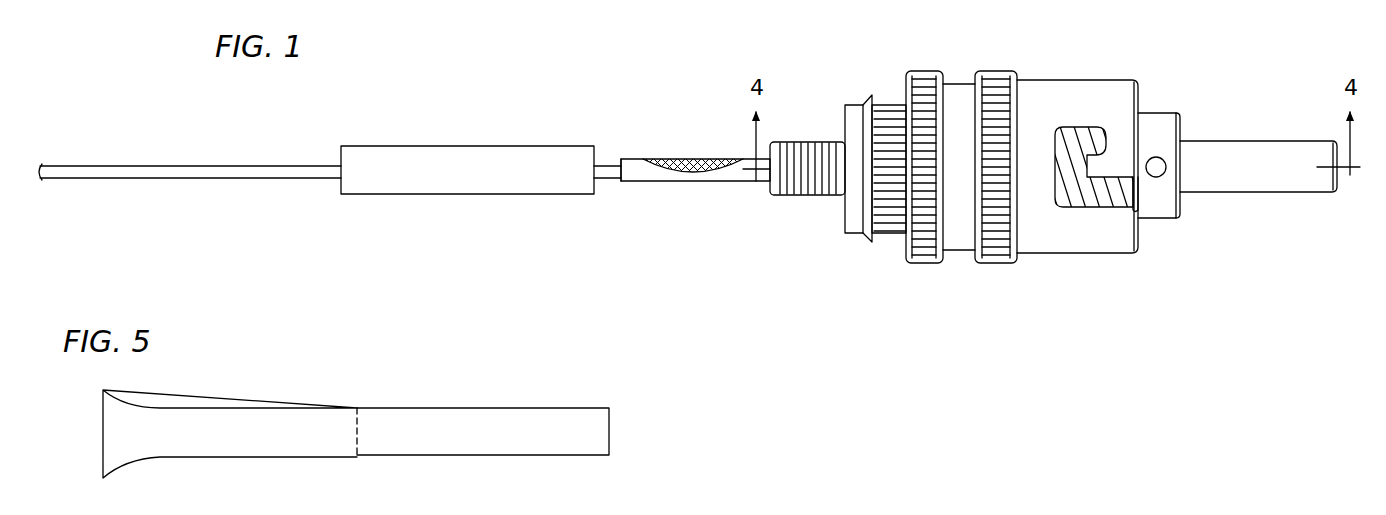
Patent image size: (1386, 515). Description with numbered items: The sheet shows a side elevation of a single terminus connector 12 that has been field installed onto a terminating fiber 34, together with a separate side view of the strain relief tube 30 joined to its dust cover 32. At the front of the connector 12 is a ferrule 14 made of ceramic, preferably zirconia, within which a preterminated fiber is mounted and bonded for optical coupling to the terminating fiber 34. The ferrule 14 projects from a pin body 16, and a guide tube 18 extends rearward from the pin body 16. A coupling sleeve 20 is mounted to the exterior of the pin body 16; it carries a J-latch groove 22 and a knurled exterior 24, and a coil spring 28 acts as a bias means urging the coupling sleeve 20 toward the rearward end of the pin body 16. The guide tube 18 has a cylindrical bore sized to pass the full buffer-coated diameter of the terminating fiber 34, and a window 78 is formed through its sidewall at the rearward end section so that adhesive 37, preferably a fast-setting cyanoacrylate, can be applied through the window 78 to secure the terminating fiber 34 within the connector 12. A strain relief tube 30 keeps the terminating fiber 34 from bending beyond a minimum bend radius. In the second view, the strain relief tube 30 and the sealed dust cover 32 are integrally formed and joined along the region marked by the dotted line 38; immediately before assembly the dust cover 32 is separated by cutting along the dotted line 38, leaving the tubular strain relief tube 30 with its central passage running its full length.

In FIG. 1, the single terminus connector 12 is at (614, 100).
In FIG. 1, the ferrule 14 is at (1240, 147).
In FIG. 1, the pin body 16 is at (1158, 118).
In FIG. 1, the guide tube 18 is at (643, 179).
In FIG. 1, the coupling sleeve 20 is at (1068, 88).
In FIG. 1, the J-latch groove 22 is at (1106, 199).
In FIG. 1, the knurled exterior 24 is at (1000, 258).
In FIG. 1, the coil spring 28 is at (1093, 126).
In FIG. 1, the strain relief tube 30 is at (397, 193).
In FIG. 5, the strain relief tube 30 is at (405, 453).
In FIG. 5, the dust cover 32 is at (232, 455).
In FIG. 1, the terminating fiber 34 is at (605, 160).
In FIG. 1, the adhesive 37 is at (706, 169).
In FIG. 5, the dotted line 38 is at (355, 427).
In FIG. 1, the window 78 is at (681, 158).